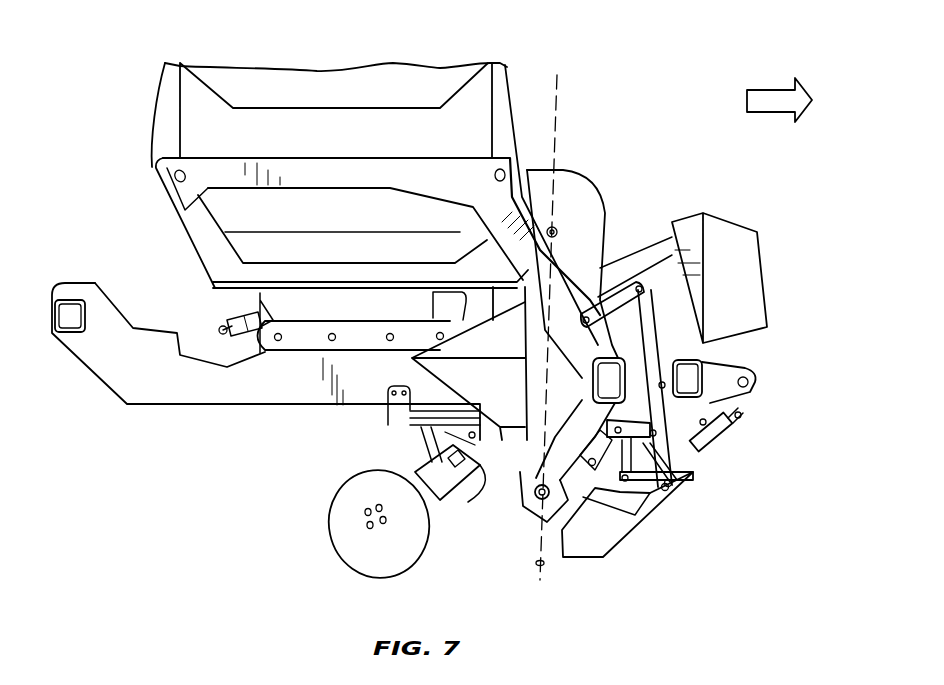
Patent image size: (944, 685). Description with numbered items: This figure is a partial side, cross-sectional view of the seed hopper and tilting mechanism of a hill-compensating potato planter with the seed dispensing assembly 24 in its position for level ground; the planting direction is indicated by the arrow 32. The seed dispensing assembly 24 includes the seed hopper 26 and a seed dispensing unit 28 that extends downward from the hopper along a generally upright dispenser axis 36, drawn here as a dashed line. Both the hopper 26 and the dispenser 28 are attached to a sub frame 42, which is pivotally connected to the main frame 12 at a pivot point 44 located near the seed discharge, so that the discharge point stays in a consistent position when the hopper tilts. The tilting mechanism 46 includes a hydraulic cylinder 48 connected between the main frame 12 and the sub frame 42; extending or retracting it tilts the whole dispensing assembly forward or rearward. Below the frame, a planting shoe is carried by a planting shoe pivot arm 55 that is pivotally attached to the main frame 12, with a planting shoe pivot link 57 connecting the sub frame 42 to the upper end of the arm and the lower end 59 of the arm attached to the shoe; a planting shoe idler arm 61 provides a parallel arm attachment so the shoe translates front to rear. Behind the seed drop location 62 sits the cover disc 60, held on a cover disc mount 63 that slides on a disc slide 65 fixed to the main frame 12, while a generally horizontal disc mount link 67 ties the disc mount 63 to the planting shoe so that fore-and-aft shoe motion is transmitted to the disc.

The main frame 12 is at (155, 383).
The seed dispensing assembly 24 is at (586, 172).
The seed hopper 26 is at (195, 120).
The seed dispensing unit 28 is at (585, 210).
The arrow 32 is at (763, 88).
The dispenser axis 36 is at (557, 107).
The sub frame 42 is at (218, 258).
The pivot point 44 is at (535, 503).
The tilting mechanism 46 is at (122, 284).
The hydraulic cylinder 48 is at (250, 312).
The planting shoe pivot arm 55 is at (645, 317).
The planting shoe pivot link 57 is at (632, 282).
The lower end of pivot arm 59 is at (660, 418).
The cover disc 60 is at (340, 537).
The planting shoe idler arm 61 is at (710, 388).
The seed drop location 62 is at (536, 563).
The cover disc mount 63 is at (443, 435).
The disc slide 65 is at (425, 418).
The disc mount link 67 is at (637, 430).